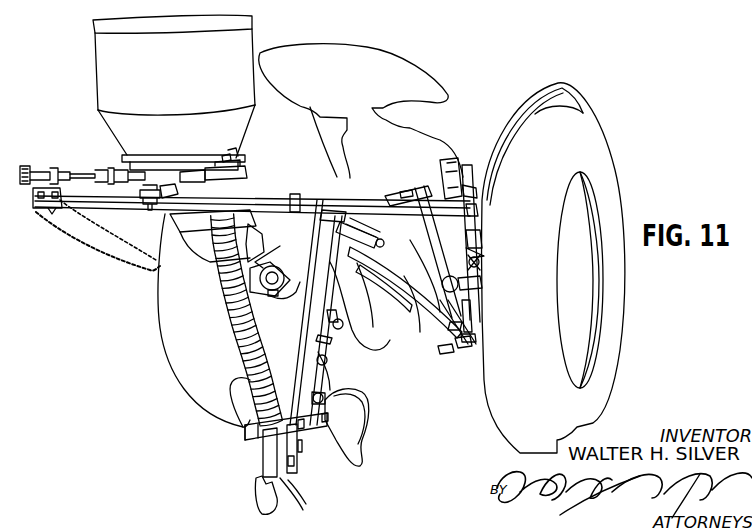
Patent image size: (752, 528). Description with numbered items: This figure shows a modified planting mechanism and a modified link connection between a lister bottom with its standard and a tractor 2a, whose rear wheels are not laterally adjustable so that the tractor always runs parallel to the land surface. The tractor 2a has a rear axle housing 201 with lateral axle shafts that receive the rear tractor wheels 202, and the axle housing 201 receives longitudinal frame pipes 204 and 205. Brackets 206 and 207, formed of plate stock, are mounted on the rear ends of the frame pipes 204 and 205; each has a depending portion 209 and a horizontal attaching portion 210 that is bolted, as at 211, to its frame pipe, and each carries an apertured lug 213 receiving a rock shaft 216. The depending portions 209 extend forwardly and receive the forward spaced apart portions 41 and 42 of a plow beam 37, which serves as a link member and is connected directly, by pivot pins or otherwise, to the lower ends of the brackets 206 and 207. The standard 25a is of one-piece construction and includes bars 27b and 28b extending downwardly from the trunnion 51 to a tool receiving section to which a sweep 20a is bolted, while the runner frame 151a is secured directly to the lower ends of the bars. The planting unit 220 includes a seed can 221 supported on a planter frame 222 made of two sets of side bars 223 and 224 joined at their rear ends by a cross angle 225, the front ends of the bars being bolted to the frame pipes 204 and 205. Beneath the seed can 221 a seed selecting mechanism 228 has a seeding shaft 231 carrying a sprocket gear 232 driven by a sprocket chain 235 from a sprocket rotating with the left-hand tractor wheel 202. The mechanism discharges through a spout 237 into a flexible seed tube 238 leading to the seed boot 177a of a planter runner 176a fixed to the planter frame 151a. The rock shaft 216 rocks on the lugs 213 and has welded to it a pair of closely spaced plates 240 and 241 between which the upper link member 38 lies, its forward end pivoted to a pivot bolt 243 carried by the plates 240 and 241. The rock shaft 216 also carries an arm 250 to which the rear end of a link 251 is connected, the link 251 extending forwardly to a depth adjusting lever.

The tractor 2a is at (474, 108).
The sweep 20a is at (360, 456).
The standard 25a is at (332, 338).
The bar 27b is at (318, 350).
The bar 28b is at (320, 382).
The plow beam 37 is at (403, 306).
The upper link member 38 is at (338, 210).
The forward end portion of plow beam 41 is at (340, 317).
The forward end portion of plow beam 42 is at (438, 348).
The trunnion 51 is at (320, 197).
The runner frame 151a is at (240, 440).
The planter runner 176a is at (306, 514).
The seed boot 177a is at (272, 453).
The rear axle housing 201 is at (412, 292).
The rear tractor wheel 202 is at (160, 329).
The longitudinal frame pipe 204 is at (250, 266).
The longitudinal frame pipe 205 is at (482, 282).
The bracket 206 is at (270, 296).
The bracket 207 is at (458, 340).
The depending portion 209 is at (470, 322).
The horizontal attaching portion 210 is at (478, 262).
The bolt 211 is at (482, 242).
The lug 213 is at (286, 198).
The rock shaft 216 is at (337, 158).
The planting unit 220 is at (81, 111).
The seed can 221 is at (114, 57).
The planter frame 222 is at (404, 177).
The side bar 223 is at (235, 236).
The side bar 224 is at (262, 286).
The cross angle 225 is at (96, 218).
The seed selecting mechanism 228 is at (238, 149).
The seeding shaft 231 is at (242, 170).
The sprocket gear 232 is at (32, 172).
The sprocket chain 235 is at (128, 253).
The spout 237 is at (222, 222).
The flexible seed tube 238 is at (240, 348).
The plate 240 is at (376, 294).
The plate 241 is at (340, 243).
The pivot bolt 243 is at (382, 240).
The arm 250 is at (476, 210).
The link 251 is at (464, 178).